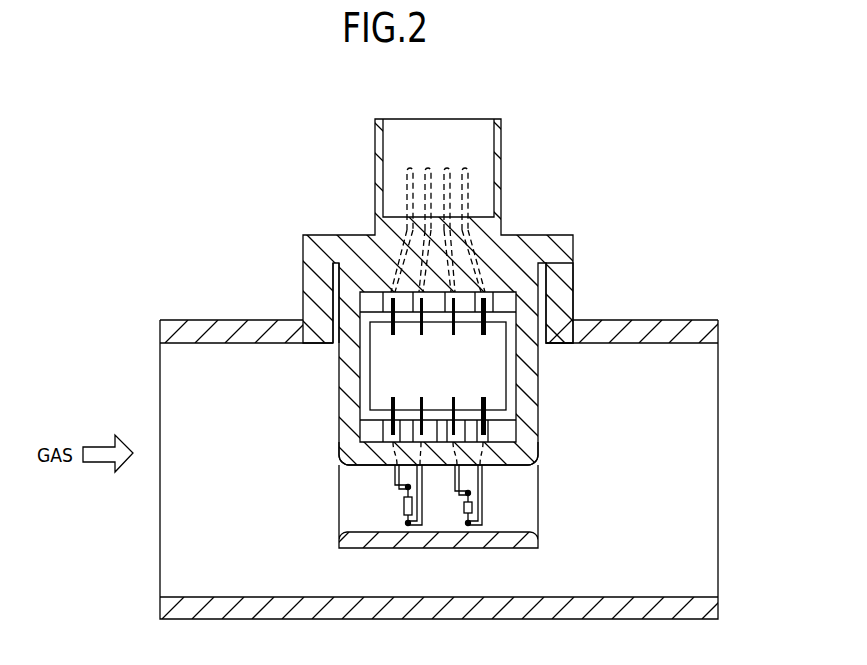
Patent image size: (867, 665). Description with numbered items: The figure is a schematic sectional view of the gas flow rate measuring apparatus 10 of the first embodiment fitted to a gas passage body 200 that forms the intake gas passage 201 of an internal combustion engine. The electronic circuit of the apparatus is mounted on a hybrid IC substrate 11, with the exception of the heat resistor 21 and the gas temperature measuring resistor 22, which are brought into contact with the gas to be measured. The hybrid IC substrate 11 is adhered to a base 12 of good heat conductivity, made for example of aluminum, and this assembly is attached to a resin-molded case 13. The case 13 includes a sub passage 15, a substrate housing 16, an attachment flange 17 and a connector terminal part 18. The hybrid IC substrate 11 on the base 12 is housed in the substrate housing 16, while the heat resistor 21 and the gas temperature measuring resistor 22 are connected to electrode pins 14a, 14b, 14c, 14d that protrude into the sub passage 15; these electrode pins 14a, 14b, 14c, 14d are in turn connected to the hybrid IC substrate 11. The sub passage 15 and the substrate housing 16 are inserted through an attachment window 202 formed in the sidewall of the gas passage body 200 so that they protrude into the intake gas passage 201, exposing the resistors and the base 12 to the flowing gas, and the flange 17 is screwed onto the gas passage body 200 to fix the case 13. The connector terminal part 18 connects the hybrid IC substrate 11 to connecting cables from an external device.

The gas flow rate measuring apparatus 10 is at (505, 150).
The hybrid IC substrate 11 is at (493, 375).
The base 12 is at (512, 320).
The case 13 is at (324, 235).
The electrode pin 14a is at (483, 523).
The electrode pin 14b is at (447, 500).
The electrode pin 14c is at (418, 527).
The electrode pin 14d is at (395, 481).
The sub passage 15 is at (530, 492).
The substrate housing 16 is at (348, 413).
The attachment flange 17 is at (553, 258).
The connector terminal part 18 is at (458, 172).
The heat resistor 21 is at (472, 525).
The gas temperature measuring resistor 22 is at (404, 506).
The gas passage body 200 is at (167, 597).
The intake gas passage 201 is at (175, 377).
The attachment window 202 is at (338, 337).